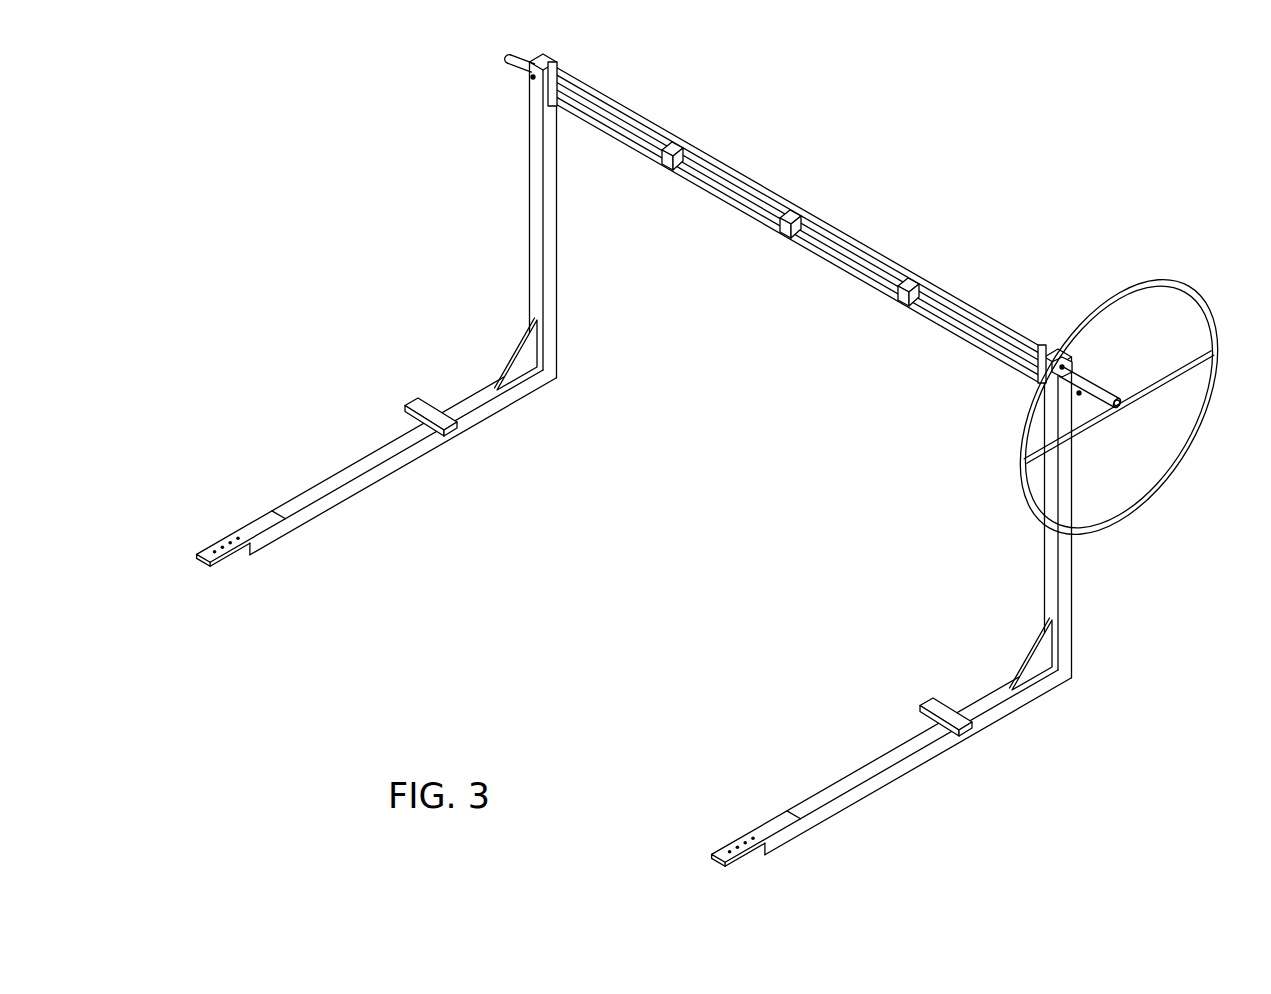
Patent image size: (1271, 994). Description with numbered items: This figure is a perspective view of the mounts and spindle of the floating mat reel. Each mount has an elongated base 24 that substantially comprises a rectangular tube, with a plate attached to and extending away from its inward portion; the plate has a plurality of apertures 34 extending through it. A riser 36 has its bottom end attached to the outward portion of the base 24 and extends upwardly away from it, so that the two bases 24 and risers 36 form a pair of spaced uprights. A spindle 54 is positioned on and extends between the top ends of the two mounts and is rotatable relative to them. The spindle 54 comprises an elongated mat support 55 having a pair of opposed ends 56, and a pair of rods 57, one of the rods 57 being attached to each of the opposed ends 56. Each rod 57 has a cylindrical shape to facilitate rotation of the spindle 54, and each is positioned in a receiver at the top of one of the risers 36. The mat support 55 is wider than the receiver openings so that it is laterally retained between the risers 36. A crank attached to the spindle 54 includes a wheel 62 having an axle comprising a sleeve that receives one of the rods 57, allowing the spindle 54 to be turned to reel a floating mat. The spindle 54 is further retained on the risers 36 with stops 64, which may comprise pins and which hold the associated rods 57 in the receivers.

The base 24 is at (372, 503).
The aperture 34 is at (755, 836).
The riser 36 is at (518, 254).
The spindle 54 is at (850, 187).
The mat support 55 is at (823, 262).
The opposed ends 56 is at (553, 66).
The rods 57 is at (508, 56).
The wheel 62 is at (1190, 297).
The stops 64 is at (1063, 375).